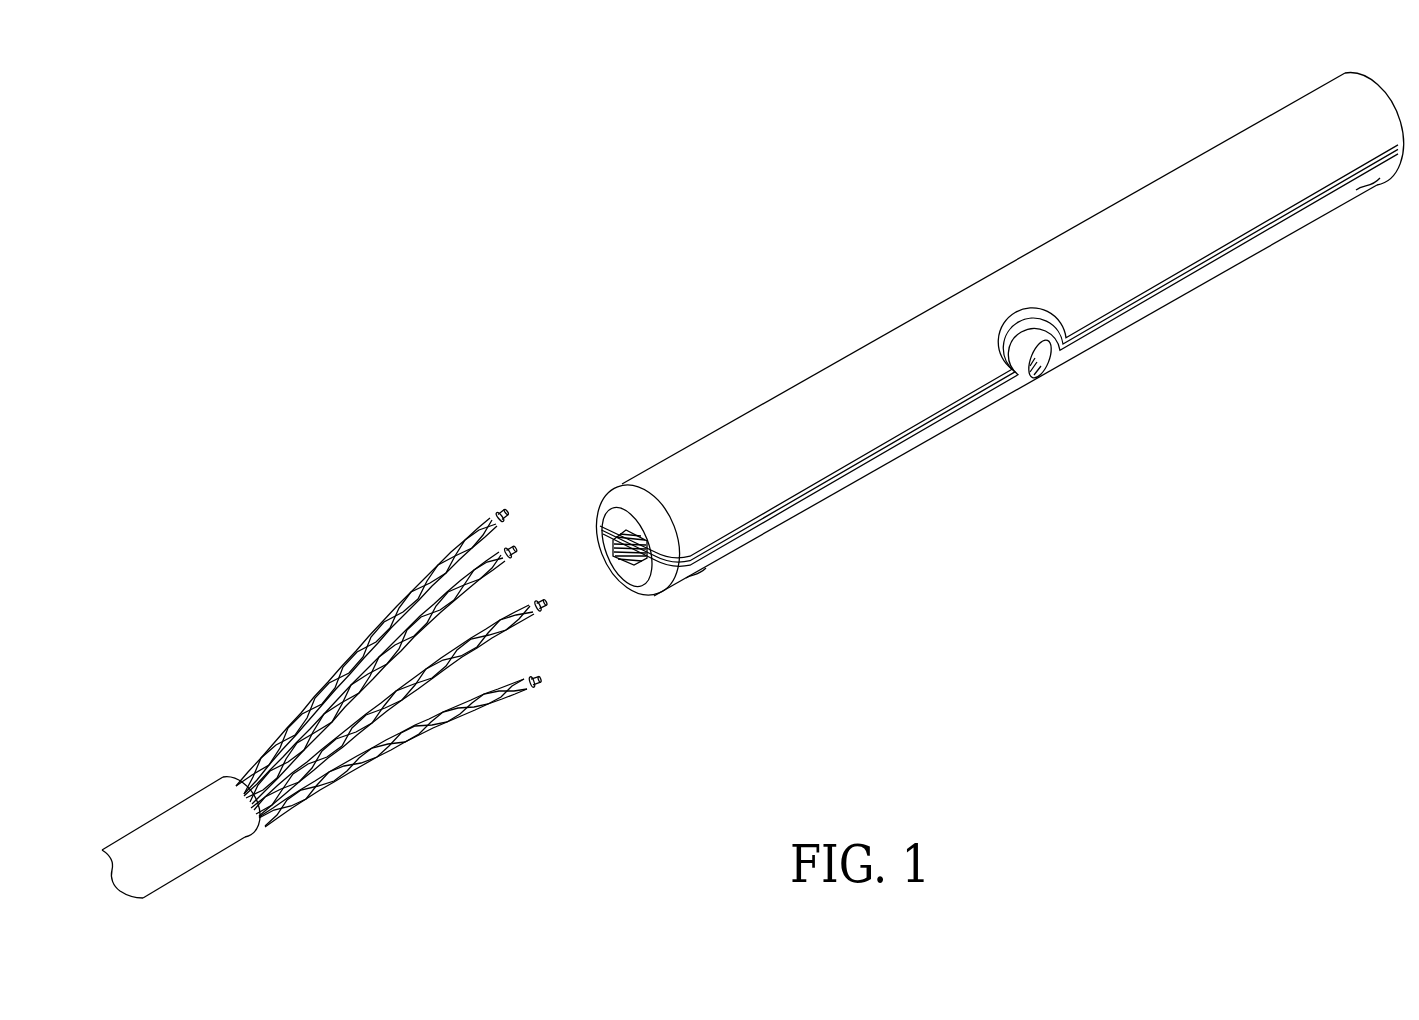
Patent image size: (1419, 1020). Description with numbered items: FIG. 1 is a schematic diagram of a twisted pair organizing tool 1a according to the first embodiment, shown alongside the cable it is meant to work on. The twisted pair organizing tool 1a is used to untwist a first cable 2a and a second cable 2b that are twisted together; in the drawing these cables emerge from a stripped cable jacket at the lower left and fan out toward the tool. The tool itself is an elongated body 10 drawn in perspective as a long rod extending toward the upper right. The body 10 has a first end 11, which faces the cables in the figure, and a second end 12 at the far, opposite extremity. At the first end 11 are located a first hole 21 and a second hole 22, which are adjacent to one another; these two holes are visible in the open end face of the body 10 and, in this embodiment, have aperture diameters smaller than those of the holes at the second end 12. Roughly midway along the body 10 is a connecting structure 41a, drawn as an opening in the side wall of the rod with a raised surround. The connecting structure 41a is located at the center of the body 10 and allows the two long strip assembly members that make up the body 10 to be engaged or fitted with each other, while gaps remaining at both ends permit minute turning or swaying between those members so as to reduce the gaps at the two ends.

The twisted pair organizing tool 1a is at (974, 352).
The body 10 is at (918, 345).
The first end 11 is at (626, 486).
The second end 12 is at (1292, 108).
The first hole 21 is at (613, 551).
The second hole 22 is at (638, 558).
The connecting structure 41a is at (1035, 364).
The first cable 2a is at (527, 600).
The second cable 2b is at (543, 615).